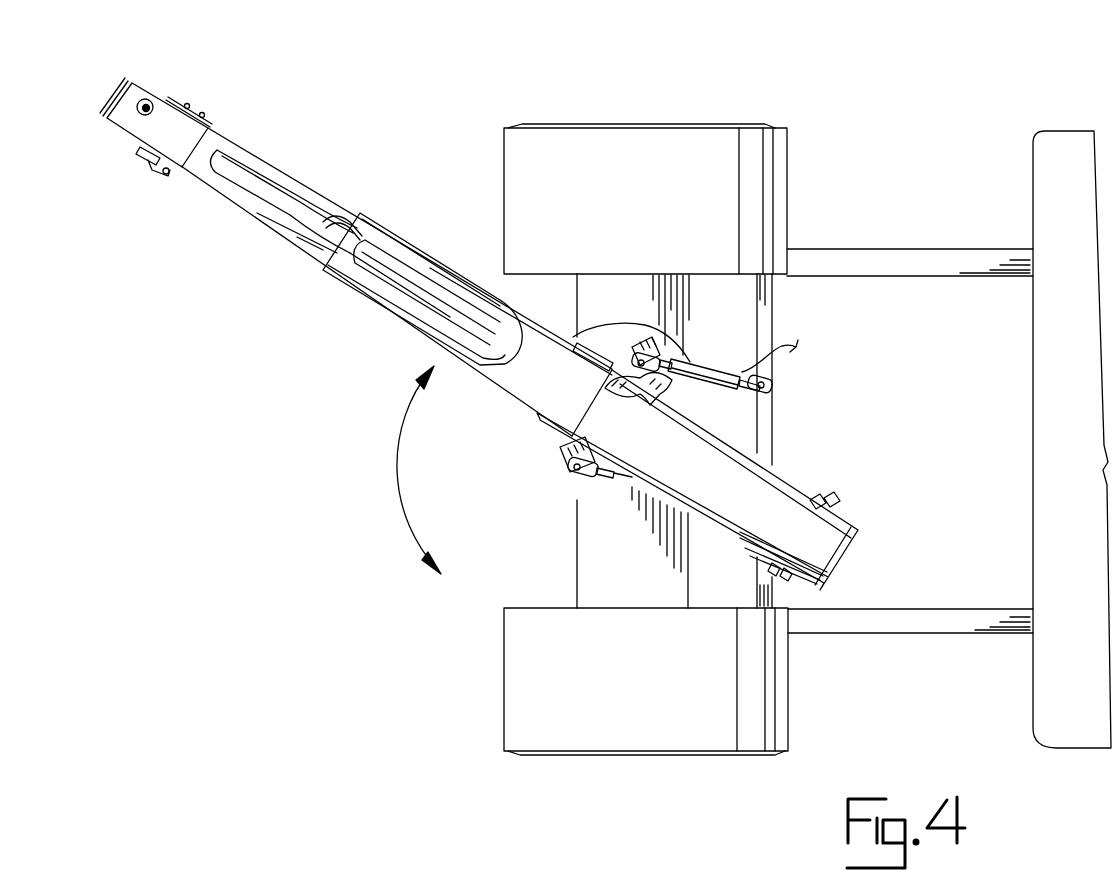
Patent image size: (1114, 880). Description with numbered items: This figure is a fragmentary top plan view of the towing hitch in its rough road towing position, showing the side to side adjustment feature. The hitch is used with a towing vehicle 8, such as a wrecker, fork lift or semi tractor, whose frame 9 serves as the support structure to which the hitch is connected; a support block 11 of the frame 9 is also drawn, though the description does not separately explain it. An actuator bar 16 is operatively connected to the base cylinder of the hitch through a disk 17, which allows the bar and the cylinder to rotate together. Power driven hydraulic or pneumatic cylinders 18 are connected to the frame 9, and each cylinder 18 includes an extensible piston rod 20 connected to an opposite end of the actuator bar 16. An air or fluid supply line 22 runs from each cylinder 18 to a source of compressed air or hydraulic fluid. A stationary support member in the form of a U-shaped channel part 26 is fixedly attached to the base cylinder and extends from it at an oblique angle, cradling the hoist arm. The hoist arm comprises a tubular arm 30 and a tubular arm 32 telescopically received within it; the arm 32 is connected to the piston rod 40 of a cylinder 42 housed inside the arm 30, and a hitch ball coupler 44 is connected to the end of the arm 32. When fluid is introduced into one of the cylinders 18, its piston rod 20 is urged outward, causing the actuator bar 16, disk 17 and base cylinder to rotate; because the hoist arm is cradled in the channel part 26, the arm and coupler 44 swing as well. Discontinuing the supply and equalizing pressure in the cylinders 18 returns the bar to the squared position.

The towing vehicle 8 is at (1060, 310).
The frame 9 is at (592, 567).
The upper support block 11 is at (768, 175).
The actuator bar 16 is at (628, 345).
The disk 17 is at (605, 387).
The power driven cylinder 18 is at (703, 363).
The piston rod 20 is at (663, 353).
The air or fluid supply line 22 is at (793, 340).
The U-shaped channel part 26 is at (778, 475).
The tubular arm 30 is at (450, 273).
The tubular arm 32 is at (283, 180).
The piston rod 40 is at (323, 220).
The cylinder 42 is at (393, 278).
The hitch ball coupler 44 is at (162, 118).